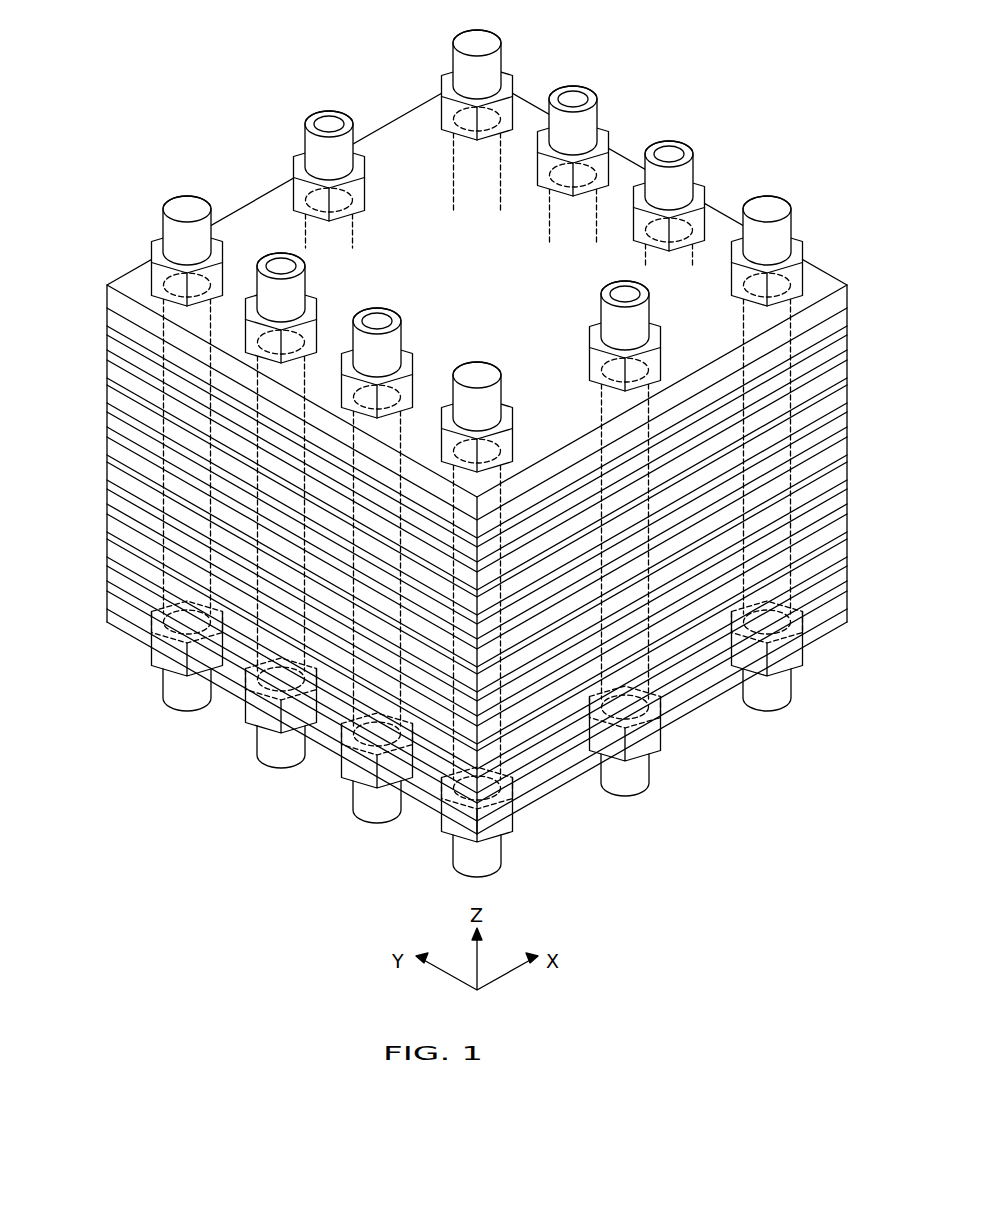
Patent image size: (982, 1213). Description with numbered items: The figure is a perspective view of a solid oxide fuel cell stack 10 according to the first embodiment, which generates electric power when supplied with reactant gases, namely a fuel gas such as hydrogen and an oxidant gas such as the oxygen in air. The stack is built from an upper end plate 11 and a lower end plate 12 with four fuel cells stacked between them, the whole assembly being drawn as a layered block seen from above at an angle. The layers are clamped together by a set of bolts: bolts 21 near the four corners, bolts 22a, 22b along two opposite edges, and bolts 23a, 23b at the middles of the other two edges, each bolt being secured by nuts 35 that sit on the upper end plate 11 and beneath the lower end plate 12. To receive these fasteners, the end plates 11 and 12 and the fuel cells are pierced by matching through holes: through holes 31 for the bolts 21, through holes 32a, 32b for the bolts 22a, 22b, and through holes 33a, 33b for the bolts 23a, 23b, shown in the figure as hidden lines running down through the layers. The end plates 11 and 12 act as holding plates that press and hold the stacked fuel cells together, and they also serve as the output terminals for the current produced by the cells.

The solid oxide fuel cell stack 10 is at (98, 124).
The end plate 11 is at (101, 287).
The end plate 12 is at (101, 619).
The bolt 21 is at (477, 453).
The bolt 22a is at (315, 284).
The bolt 22b is at (593, 116).
The bolt 23a is at (313, 143).
The bolt 23b is at (648, 316).
The through hole 31 is at (452, 192).
The through hole 32a is at (310, 507).
The through hole 32b is at (548, 226).
The through hole 33a is at (306, 242).
The through hole 33b is at (602, 398).
The nut 35 is at (153, 252).